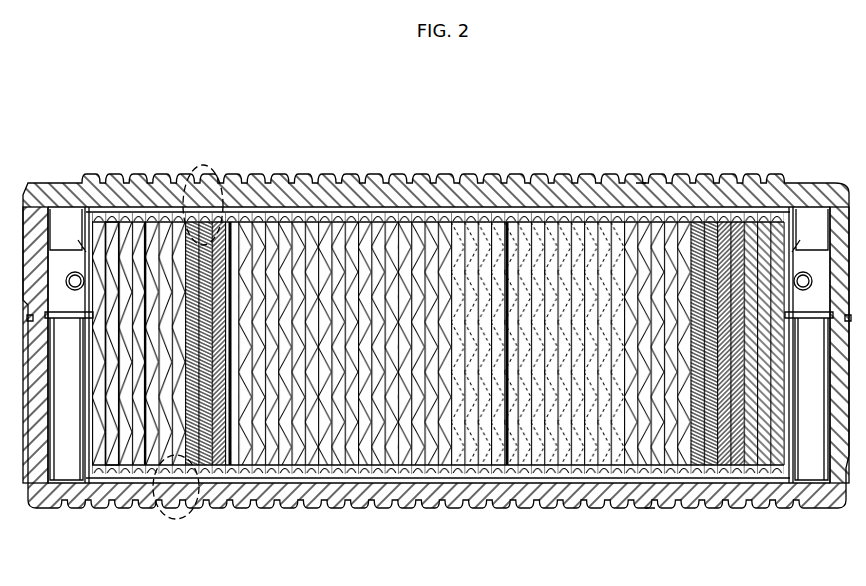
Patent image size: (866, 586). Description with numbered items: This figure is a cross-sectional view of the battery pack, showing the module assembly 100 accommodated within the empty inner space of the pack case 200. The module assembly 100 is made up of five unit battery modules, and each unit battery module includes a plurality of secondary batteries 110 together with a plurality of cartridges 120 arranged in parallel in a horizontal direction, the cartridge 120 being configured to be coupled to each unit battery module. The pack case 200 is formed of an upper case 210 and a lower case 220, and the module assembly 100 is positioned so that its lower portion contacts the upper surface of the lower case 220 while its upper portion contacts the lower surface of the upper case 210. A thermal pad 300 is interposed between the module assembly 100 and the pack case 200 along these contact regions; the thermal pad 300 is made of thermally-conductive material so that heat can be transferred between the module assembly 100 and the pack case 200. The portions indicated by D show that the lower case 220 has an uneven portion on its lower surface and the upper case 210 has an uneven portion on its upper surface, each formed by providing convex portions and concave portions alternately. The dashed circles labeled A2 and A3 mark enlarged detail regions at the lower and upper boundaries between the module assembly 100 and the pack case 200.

The module assembly 100 is at (161, 143).
The secondary battery 110 is at (120, 216).
The cartridge 120 is at (150, 216).
The pack case 200 is at (437, 352).
The upper case 210 is at (319, 200).
The lower case 220 is at (320, 497).
The thermal pad 300 is at (482, 212).
The detail region A2 is at (167, 526).
The detail region A3 is at (217, 165).
The uneven portion D is at (648, 180).